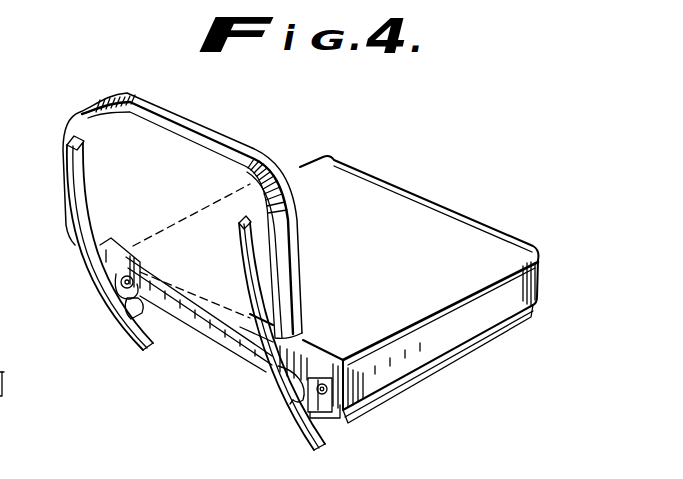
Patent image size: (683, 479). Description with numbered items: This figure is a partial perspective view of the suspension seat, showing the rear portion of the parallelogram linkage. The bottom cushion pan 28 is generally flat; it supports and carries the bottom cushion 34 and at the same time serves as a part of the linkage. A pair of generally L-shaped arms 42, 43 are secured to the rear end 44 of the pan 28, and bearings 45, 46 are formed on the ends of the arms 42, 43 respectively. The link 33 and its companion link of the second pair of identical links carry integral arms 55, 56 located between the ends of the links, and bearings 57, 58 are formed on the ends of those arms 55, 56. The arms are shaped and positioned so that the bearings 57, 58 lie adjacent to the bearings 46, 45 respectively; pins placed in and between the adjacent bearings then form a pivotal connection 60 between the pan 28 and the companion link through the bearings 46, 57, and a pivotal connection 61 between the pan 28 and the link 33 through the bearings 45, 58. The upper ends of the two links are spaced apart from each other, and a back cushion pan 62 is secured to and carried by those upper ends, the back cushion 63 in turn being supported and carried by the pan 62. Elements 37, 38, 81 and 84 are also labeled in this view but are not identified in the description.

The bottom cushion pan 28 is at (433, 373).
The link 33 is at (73, 152).
The bottom cushion 34 is at (387, 253).
The cross member 37 is at (13, 259).
The front rail 38 is at (486, 333).
The L-shaped arm 42 is at (133, 307).
The L-shaped arm 43 is at (325, 417).
The rear end of the pan 44 is at (200, 333).
The bearing 45 is at (105, 240).
The bearing 46 is at (312, 392).
The integral arm 55 is at (290, 406).
The integral arm 56 is at (118, 285).
The bearing 57 is at (302, 377).
The bearing 58 is at (133, 279).
The pivotal connection 60 is at (308, 378).
The pivotal connection 61 is at (140, 247).
The back cushion pan 62 is at (88, 118).
The back cushion 63 is at (187, 125).
The link 81 is at (13, 350).
The link 84 is at (3, 394).